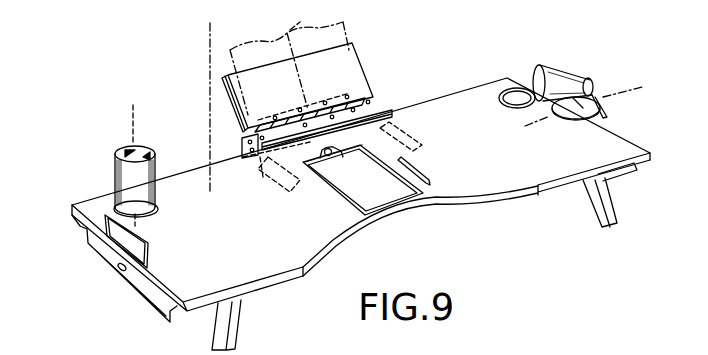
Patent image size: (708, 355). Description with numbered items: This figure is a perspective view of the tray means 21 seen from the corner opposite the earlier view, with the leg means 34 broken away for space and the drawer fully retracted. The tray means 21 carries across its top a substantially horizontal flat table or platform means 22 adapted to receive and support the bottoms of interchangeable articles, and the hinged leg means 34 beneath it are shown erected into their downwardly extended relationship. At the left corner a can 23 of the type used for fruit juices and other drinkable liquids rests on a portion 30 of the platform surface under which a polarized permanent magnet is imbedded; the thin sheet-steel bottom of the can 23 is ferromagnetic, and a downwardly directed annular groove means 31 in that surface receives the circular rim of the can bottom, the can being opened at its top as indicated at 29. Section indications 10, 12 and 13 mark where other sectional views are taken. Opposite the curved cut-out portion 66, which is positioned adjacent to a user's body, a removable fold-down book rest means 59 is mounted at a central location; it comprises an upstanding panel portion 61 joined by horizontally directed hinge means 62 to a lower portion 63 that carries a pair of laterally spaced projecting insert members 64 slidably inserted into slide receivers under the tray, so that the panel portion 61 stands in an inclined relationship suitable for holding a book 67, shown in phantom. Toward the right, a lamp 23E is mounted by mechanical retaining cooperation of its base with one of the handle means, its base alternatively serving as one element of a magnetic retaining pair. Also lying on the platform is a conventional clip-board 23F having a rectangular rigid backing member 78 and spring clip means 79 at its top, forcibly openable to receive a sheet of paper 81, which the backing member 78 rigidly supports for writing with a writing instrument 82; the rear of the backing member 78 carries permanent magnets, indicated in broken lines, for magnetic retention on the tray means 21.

The section line 10- 10 is at (208, 23).
The section line 12- 12 is at (535, 124).
The section line 13- 13 is at (133, 103).
The tray means 21 is at (453, 75).
The table or platform means 22 is at (263, 258).
The can 23 is at (113, 173).
The lamp 23E is at (598, 86).
The clip-board 23F is at (350, 218).
The open top of the can 29 is at (128, 148).
The platform surface portion with imbedded magnet 30 is at (160, 194).
The annular groove means 31 is at (107, 202).
The leg means 34 is at (624, 206).
The book rest means 59 is at (368, 72).
The upstanding panel portion 61 is at (346, 58).
The hinge means 62 is at (345, 110).
The lower portion 63 is at (388, 111).
The projecting insert members 64 is at (280, 195).
The curved cut-out portion 66 is at (421, 208).
The book 67 is at (293, 31).
The rigid backing member 78 is at (335, 198).
The spring clip means 79 is at (323, 162).
The paper 81 is at (367, 182).
The writing instrument 82 is at (418, 176).